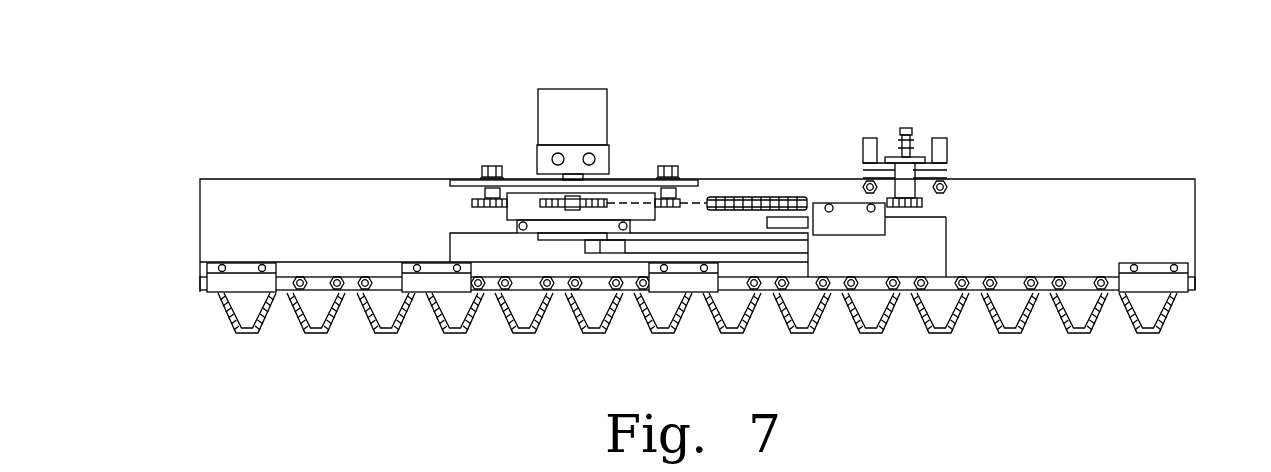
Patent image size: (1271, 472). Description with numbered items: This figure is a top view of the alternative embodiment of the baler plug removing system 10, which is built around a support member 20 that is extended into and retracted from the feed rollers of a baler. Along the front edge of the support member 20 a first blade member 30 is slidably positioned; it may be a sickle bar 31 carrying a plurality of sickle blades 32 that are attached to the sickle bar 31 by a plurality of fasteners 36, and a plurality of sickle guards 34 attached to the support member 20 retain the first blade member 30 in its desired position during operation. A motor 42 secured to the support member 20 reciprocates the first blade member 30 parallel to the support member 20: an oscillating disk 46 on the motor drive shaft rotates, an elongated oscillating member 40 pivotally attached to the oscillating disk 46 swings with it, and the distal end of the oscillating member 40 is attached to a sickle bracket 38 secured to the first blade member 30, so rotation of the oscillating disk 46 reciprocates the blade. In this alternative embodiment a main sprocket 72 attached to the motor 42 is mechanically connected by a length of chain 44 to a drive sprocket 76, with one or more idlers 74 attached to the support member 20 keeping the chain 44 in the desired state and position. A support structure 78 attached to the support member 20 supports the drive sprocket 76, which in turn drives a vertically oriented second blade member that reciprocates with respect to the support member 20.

The baler plug removing system 10 is at (258, 112).
The support member 20 is at (1095, 200).
The first blade member 30 is at (1097, 298).
The sickle bar 31 is at (322, 283).
The sickle blades 32 is at (1023, 317).
The sickle guards 34 is at (1190, 277).
The fasteners 36 is at (996, 317).
The sickle bracket 38 is at (945, 237).
The oscillating member 40 is at (708, 243).
The motor 42 is at (586, 102).
The chain 44 is at (747, 198).
The oscillating disk 46 is at (570, 236).
The main sprocket 72 is at (562, 203).
The idlers 74 is at (475, 200).
The drive sprocket 76 is at (935, 188).
The support structure 78 is at (872, 148).